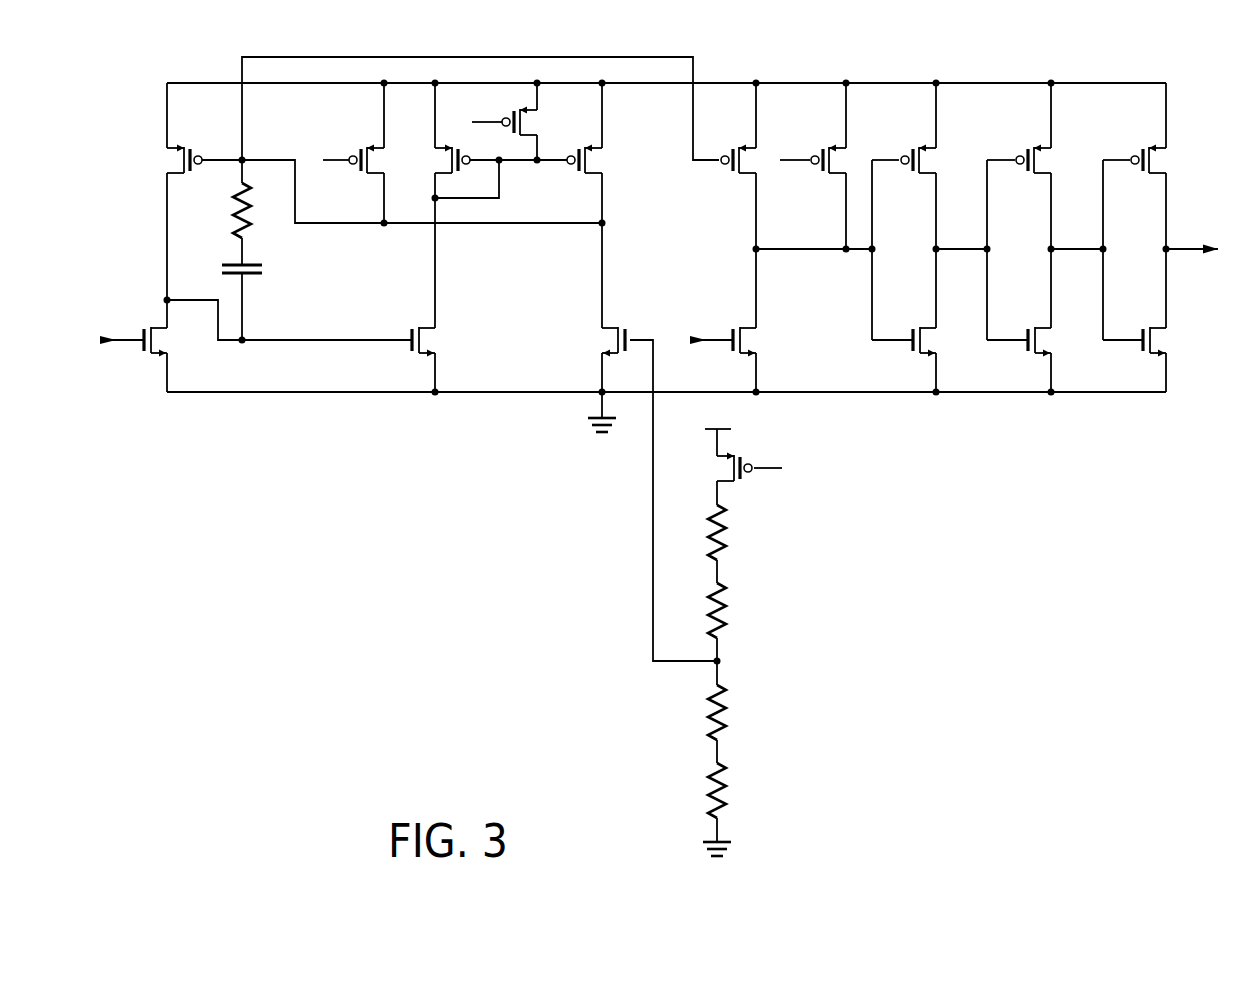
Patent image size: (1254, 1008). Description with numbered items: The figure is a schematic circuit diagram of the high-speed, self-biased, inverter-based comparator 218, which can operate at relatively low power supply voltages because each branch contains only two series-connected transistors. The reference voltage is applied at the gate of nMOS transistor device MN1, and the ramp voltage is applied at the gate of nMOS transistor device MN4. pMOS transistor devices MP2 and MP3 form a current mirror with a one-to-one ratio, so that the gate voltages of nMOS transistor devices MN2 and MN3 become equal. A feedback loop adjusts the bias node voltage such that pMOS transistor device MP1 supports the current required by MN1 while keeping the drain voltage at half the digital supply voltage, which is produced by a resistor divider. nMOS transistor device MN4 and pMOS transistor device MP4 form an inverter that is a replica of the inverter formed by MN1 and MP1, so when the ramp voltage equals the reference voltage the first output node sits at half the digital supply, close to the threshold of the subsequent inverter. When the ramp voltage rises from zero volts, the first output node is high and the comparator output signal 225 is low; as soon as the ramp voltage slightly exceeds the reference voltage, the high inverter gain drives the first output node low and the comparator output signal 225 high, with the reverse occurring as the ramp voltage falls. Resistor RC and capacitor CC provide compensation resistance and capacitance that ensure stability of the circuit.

The comparator 218 is at (671, 458).
The comparator output signal 225 is at (1185, 253).
The pMOS transistor device MP1 is at (166, 159).
The pMOS transistor device MP2 is at (434, 159).
The pMOS transistor device MP3 is at (604, 159).
The pMOS transistor device MP4 is at (730, 171).
The nMOS transistor device MN1 is at (174, 342).
The nMOS transistor device MN2 is at (443, 342).
The nMOS transistor device MN3 is at (594, 342).
The nMOS transistor device MN4 is at (765, 342).
The resistor RC is at (227, 210).
The capacitor CC is at (228, 270).